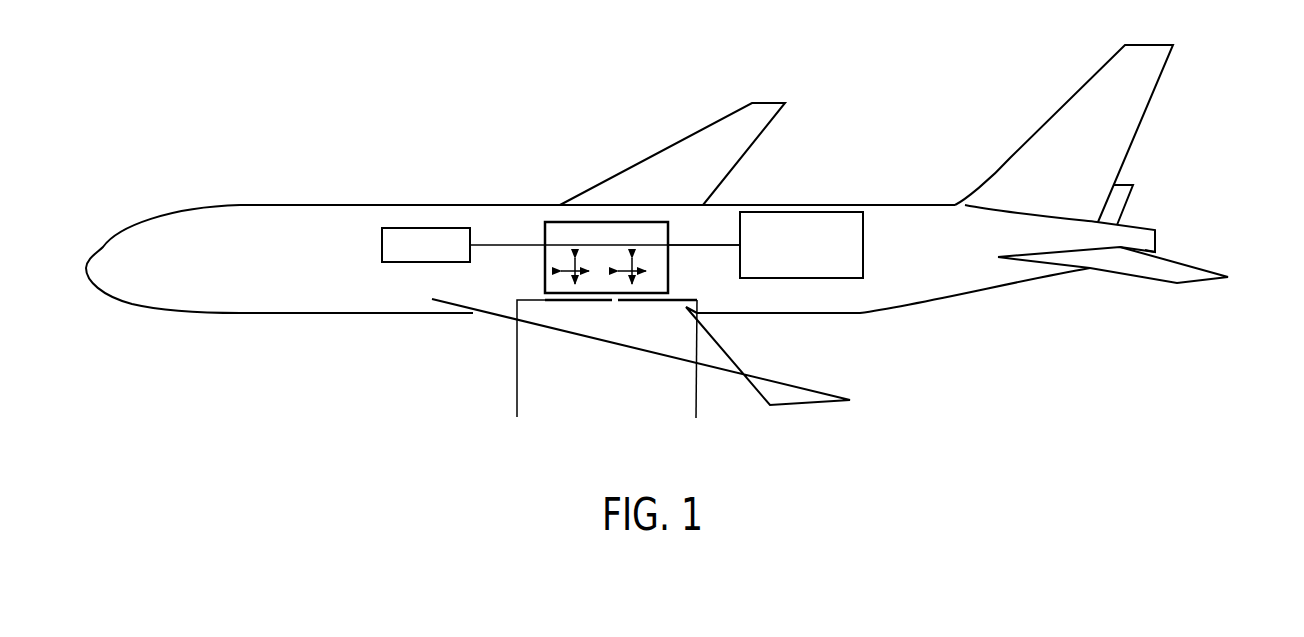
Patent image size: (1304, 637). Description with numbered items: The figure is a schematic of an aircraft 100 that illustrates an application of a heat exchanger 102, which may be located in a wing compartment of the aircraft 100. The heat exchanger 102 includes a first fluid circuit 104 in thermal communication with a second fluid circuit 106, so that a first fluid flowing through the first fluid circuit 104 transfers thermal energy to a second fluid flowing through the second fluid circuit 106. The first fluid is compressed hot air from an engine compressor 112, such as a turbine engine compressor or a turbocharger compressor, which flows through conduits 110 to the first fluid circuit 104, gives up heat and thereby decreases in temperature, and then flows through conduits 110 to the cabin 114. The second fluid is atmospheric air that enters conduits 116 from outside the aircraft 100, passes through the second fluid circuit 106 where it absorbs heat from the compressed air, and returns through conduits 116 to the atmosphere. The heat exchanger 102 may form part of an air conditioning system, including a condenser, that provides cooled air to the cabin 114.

The aircraft 100 is at (868, 126).
The heat exchanger 102 is at (560, 222).
The first fluid circuit 104 is at (631, 244).
The second fluid circuit 106 is at (613, 300).
The conduits 110 is at (703, 245).
The engine compressor 112 is at (812, 212).
The cabin 114 is at (425, 228).
The conduits 116 is at (517, 407).